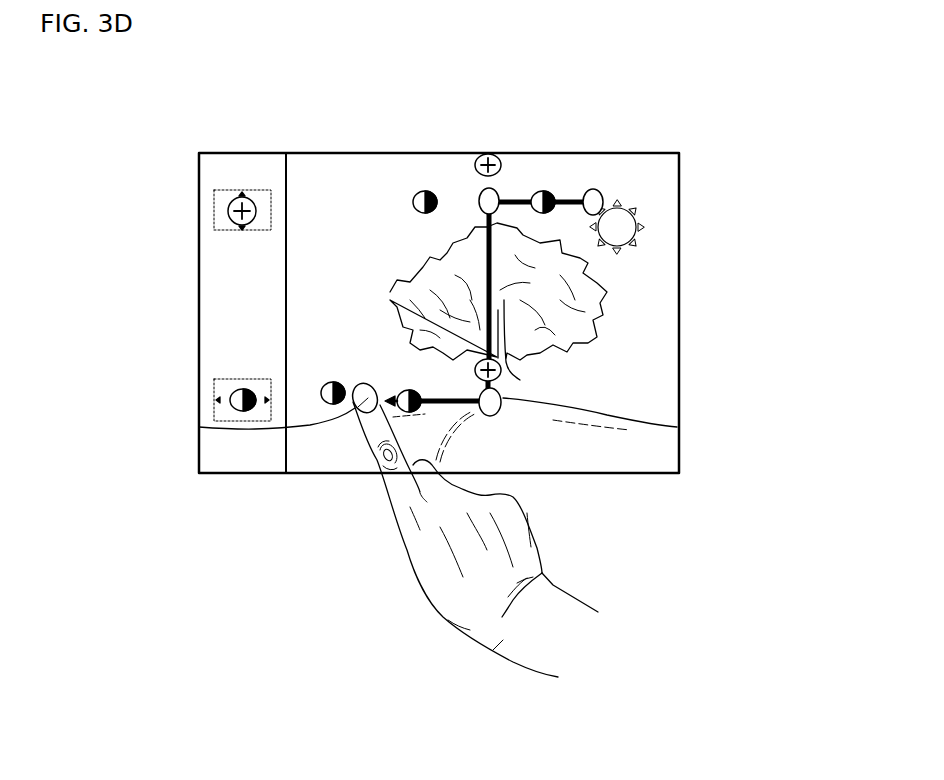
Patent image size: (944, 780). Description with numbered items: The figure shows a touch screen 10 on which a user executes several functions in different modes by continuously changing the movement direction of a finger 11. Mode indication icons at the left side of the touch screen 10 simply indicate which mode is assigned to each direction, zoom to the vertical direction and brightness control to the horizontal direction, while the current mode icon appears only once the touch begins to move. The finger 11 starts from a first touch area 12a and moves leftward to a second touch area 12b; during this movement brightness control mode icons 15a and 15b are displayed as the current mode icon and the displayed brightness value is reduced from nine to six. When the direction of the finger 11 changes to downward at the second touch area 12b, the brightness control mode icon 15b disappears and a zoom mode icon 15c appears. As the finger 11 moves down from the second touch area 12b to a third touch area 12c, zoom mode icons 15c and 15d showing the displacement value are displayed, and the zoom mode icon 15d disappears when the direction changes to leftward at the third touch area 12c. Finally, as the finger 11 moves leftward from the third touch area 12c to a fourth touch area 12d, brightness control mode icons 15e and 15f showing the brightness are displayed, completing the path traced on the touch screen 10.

The touch screen 10 is at (679, 212).
The finger 11 is at (388, 496).
The first touch area 12a is at (593, 188).
The second touch area 12b is at (482, 189).
The third touch area 12c is at (505, 412).
The fourth touch area 12d is at (356, 406).
The brightness control mode icon 15a is at (543, 190).
The brightness control mode icon 15b is at (424, 190).
The zoom mode icon 15c is at (488, 153).
The zoom mode icon 15d is at (501, 370).
The brightness control mode icon 15e is at (410, 390).
The brightness control mode icon 15f is at (333, 382).